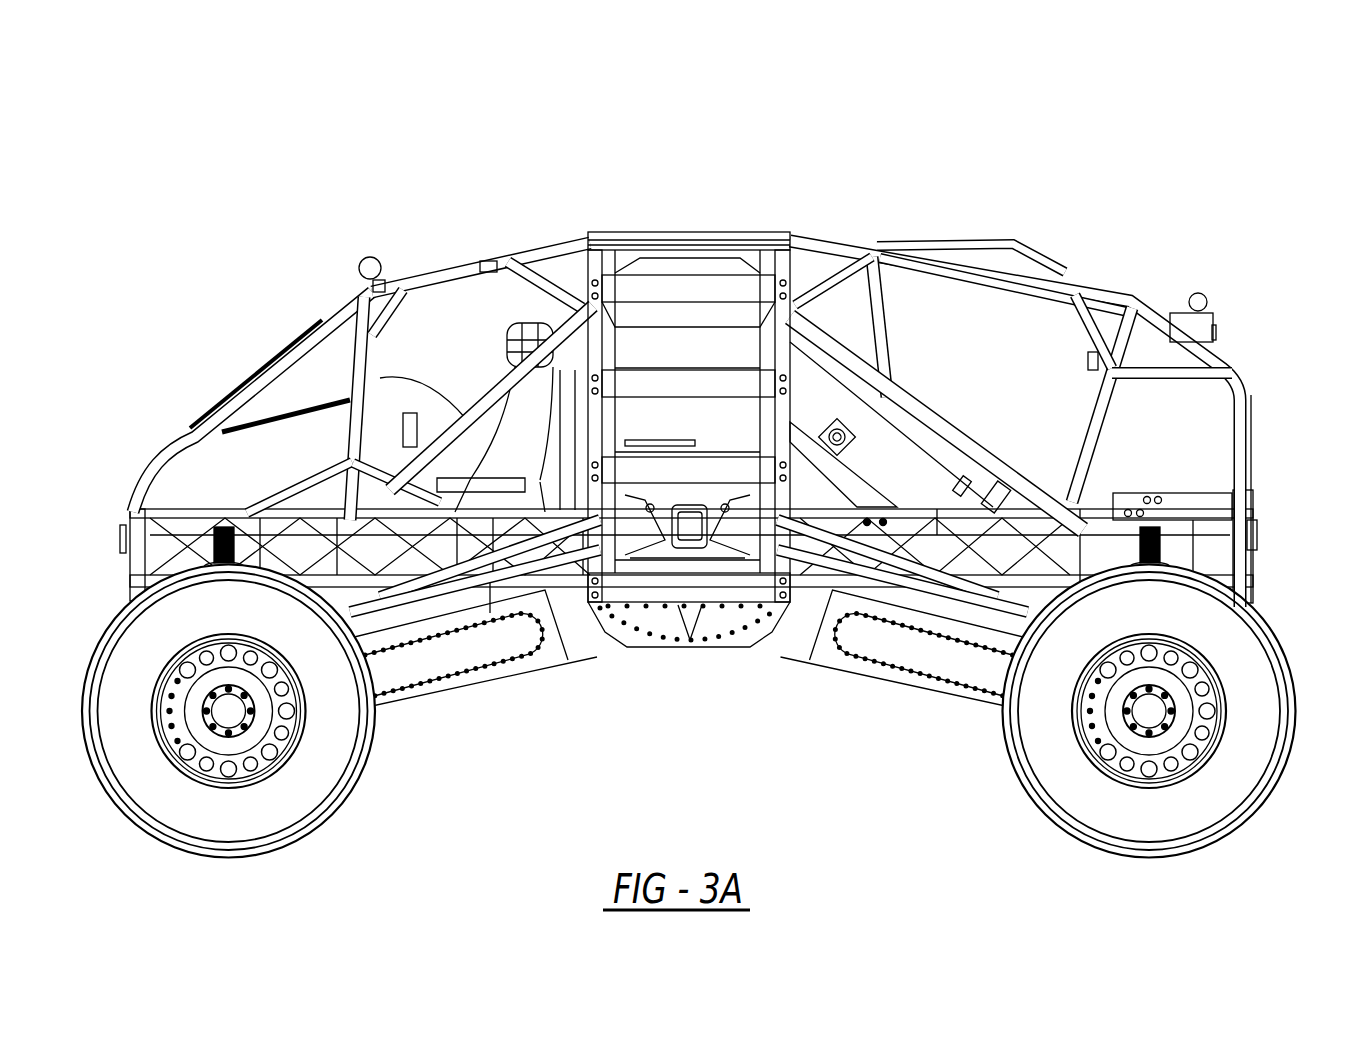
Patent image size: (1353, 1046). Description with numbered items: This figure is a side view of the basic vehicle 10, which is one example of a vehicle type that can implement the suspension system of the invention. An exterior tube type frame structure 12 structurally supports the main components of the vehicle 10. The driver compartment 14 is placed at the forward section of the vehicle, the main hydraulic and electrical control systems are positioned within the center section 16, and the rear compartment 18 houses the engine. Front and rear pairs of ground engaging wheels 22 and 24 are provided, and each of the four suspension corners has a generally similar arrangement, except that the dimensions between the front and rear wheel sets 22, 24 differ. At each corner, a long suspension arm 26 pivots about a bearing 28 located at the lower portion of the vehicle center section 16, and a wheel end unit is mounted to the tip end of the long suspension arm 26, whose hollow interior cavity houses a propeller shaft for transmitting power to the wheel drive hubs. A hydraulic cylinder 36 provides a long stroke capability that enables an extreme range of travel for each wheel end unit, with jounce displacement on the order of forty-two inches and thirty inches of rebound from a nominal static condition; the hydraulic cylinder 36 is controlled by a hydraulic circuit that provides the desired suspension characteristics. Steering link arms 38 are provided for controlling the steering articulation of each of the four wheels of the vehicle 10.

The vehicle 10 is at (684, 177).
The exterior tube type frame structure 12 is at (847, 238).
The driver compartment 14 is at (472, 328).
The center section 16 is at (738, 232).
The rear compartment 18 is at (1127, 298).
The front ground engaging wheels 22 is at (298, 793).
The rear ground engaging wheels 24 is at (1222, 785).
The long suspension arm 26 is at (527, 672).
The bearing 28 is at (650, 650).
The hydraulic cylinder 36 is at (468, 423).
The steering link arms 38 is at (383, 580).